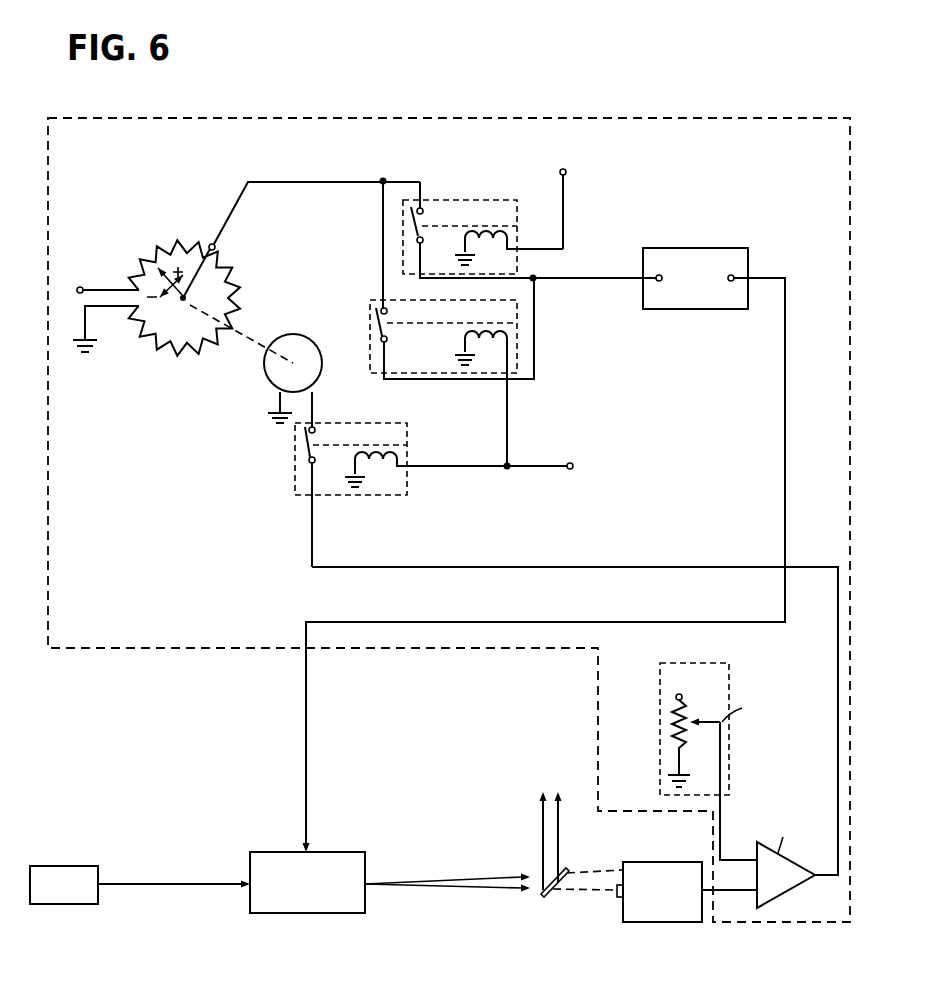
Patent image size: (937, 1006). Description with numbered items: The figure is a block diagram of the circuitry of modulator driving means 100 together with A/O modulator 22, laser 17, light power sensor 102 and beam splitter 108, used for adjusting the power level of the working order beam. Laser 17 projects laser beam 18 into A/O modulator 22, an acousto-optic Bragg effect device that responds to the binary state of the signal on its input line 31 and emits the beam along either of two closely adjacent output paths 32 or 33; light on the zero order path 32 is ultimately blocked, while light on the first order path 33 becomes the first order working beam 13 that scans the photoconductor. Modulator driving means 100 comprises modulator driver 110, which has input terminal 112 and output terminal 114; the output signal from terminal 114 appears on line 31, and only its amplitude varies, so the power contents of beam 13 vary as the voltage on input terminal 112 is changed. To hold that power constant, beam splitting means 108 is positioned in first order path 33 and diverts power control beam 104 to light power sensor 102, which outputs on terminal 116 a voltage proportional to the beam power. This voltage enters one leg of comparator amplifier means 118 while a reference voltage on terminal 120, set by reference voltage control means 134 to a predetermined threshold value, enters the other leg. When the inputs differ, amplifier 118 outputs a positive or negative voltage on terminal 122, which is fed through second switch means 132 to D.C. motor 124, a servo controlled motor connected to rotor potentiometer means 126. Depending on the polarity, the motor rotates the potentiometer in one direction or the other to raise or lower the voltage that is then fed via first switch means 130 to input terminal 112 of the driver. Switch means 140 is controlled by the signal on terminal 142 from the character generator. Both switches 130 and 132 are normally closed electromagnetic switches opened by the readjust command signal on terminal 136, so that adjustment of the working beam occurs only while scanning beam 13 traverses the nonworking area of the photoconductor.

The modulator driving means 100 is at (585, 118).
The light power sensor 102 is at (668, 862).
The power control beam 104 is at (590, 893).
The beam splitting means 108 is at (545, 893).
The modulator driver 110 is at (697, 248).
The input terminal 112 is at (661, 276).
The output terminal 114 is at (734, 276).
The terminal 116 is at (723, 893).
The comparator amplifier means 118 is at (797, 885).
The terminal 120 is at (722, 777).
The terminal 122 is at (604, 566).
The D.C. motor 124 is at (265, 375).
The rotor potentiometer means 126 is at (164, 243).
The first switch means 130 is at (370, 310).
The second switch means 132 is at (295, 484).
The reference voltage control means 134 is at (695, 663).
The terminal 136 is at (565, 470).
The switch means 140 is at (445, 199).
The terminal 142 is at (561, 190).
The first order working beam 13 is at (543, 823).
The laser 17 is at (60, 866).
The laser beam 18 is at (155, 882).
The A/O modulator 22 is at (337, 852).
The input line 31 is at (308, 720).
The zero order beam path 32 is at (487, 875).
The first order beam path 33 is at (488, 888).